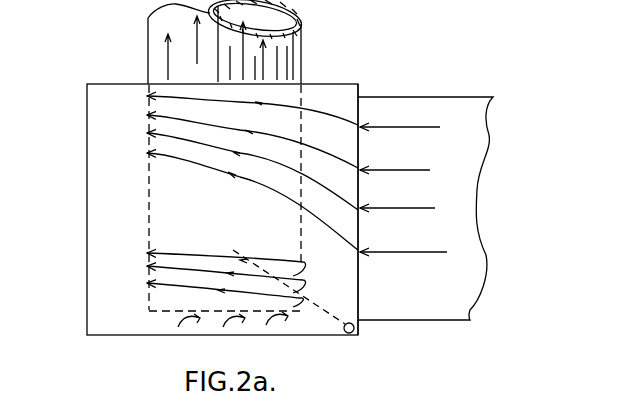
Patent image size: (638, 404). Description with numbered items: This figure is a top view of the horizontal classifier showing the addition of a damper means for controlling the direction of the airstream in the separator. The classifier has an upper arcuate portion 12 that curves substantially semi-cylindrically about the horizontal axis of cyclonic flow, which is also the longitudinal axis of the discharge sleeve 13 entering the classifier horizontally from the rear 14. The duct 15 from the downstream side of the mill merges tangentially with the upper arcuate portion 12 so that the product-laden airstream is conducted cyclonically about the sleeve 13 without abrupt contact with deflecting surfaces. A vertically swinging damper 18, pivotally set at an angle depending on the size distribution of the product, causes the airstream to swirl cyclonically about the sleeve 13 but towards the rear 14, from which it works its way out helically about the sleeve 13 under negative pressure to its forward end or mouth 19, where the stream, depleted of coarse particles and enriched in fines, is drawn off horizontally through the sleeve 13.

The upper arcuate portion 12 is at (87, 221).
The discharge sleeve 13 is at (303, 50).
The rear 14 is at (332, 84).
The duct 15 is at (467, 97).
The vertically swinging damper 18 is at (346, 323).
The mouth 19 is at (158, 311).